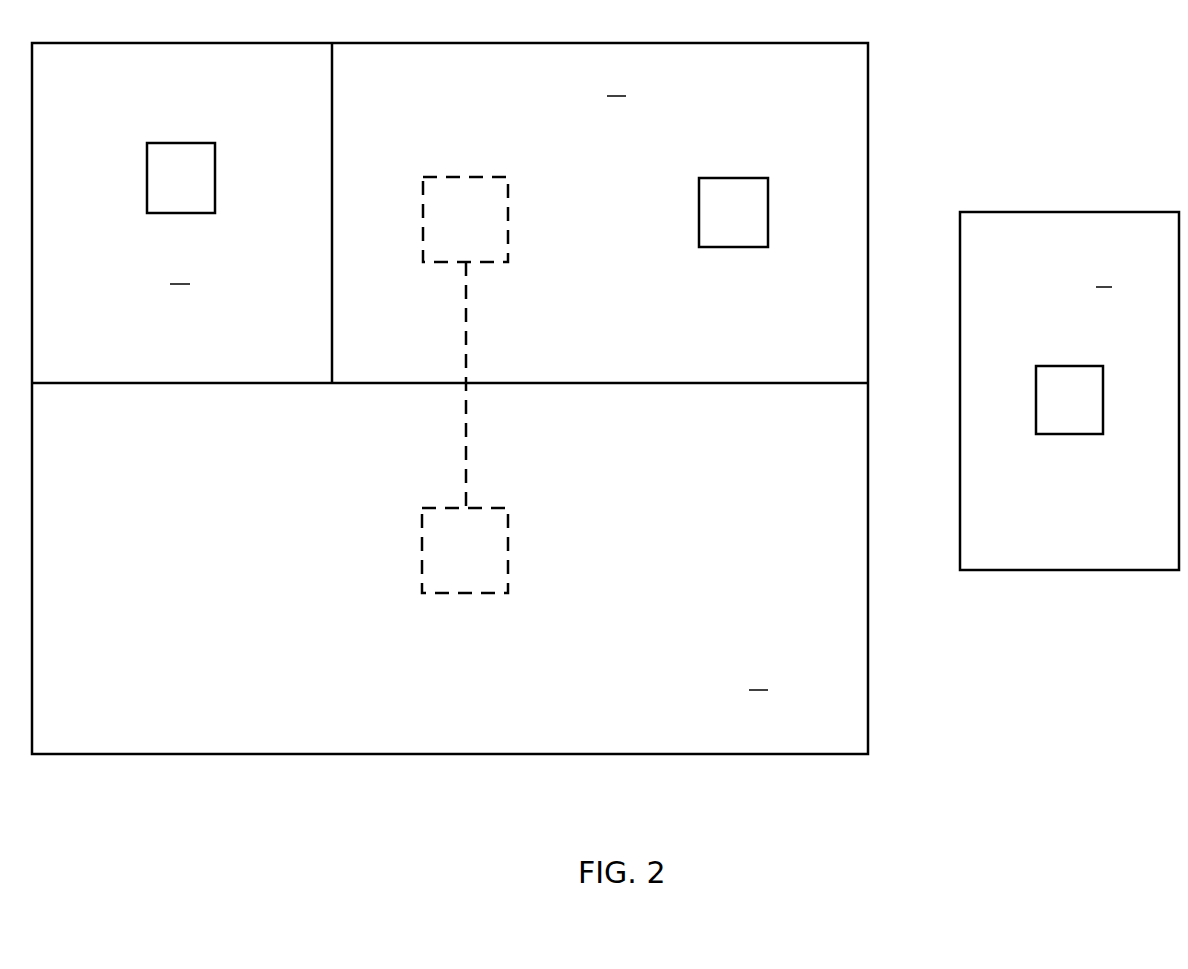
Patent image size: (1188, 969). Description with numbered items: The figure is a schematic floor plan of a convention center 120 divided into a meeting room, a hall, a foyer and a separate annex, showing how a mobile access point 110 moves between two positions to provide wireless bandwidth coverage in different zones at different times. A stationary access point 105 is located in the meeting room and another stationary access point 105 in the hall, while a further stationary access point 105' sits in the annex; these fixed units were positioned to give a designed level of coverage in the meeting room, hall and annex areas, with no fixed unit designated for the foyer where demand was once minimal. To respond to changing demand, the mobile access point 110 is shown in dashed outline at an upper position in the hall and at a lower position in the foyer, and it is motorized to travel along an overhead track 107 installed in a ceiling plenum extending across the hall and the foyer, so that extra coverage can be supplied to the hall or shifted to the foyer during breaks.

The convention center 120 is at (868, 43).
The stationary access point 105 is at (763, 191).
The mobile access point 110 is at (508, 177).
The overhead track 107 is at (466, 328).
The stationary access point 105' is at (1069, 391).